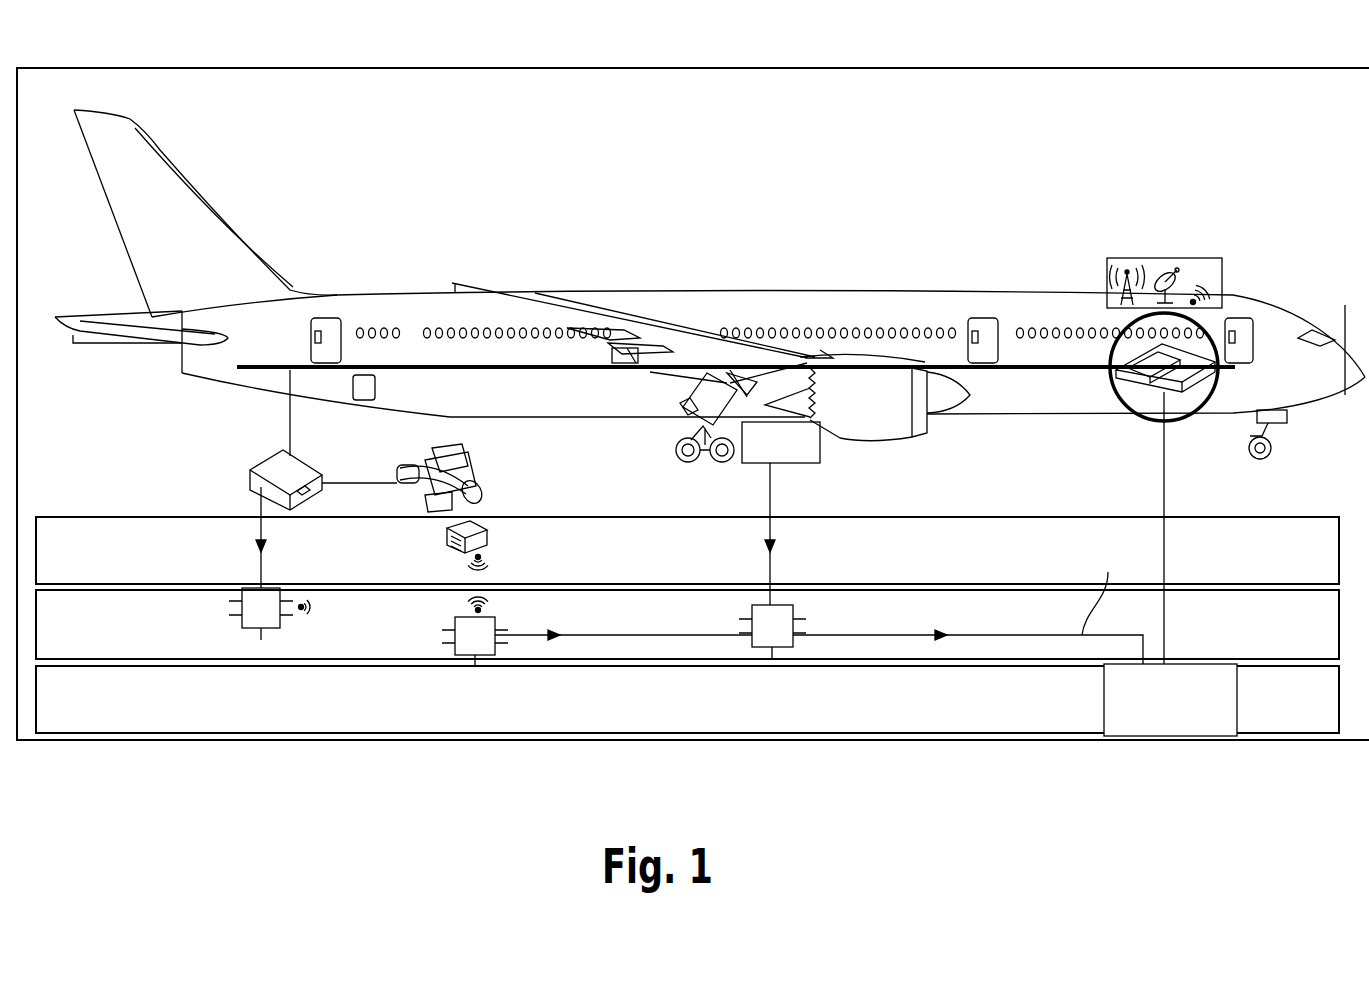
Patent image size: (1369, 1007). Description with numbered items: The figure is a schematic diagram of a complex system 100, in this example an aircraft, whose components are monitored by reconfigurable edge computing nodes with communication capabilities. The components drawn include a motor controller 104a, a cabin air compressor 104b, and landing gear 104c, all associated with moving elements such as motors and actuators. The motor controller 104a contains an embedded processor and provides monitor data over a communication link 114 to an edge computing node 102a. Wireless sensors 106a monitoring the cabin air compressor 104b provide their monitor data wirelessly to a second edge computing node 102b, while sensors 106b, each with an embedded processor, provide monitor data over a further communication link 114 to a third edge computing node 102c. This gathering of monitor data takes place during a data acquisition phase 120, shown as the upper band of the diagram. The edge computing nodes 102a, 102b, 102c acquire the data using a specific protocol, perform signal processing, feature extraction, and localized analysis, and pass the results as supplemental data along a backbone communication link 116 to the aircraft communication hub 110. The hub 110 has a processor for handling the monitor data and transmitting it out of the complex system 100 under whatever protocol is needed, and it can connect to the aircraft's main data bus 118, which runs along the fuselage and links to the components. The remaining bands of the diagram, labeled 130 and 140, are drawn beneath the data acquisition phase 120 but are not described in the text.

The complex system 100 is at (1232, 42).
The edge computing node 102a is at (270, 588).
The edge computing node 102b is at (462, 617).
The edge computing node 102c is at (757, 605).
The motor controller 104a is at (250, 468).
The cabin air compressor 104b is at (500, 474).
The landing gear 104c is at (655, 460).
The wireless sensors 106a is at (447, 540).
The sensors 106b is at (783, 465).
The aircraft communication hub 110 is at (1225, 288).
The communication link 114 is at (261, 530).
The backbone communication link 116 is at (595, 638).
The main data bus 118 is at (442, 365).
The data acquisition phase 120 is at (128, 498).
The edge compute node layer 130 is at (142, 672).
The communication layer 140 is at (192, 750).